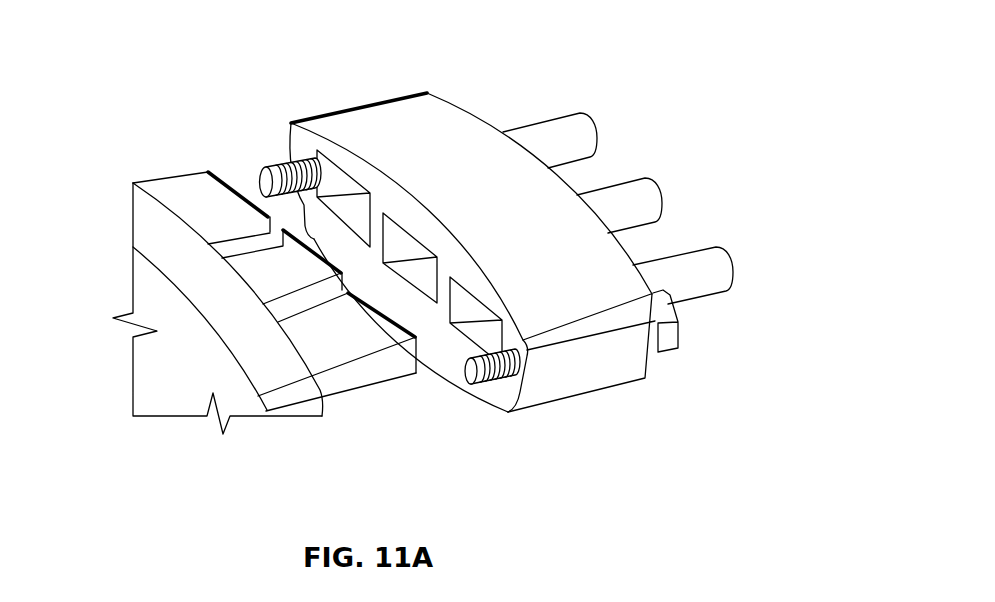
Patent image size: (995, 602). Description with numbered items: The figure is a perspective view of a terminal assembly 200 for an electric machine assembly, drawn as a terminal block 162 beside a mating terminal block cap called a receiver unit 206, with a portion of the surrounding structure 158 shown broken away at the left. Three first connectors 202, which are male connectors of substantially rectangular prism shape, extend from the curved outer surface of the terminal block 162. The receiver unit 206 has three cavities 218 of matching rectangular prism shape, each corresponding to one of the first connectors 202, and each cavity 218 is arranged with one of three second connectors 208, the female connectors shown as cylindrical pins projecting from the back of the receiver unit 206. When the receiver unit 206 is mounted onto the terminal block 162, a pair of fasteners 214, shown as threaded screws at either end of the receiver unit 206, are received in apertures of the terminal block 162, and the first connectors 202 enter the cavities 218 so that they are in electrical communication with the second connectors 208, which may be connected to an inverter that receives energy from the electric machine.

The terminal assembly 200 is at (467, 57).
The housing block 158 is at (242, 316).
The terminal block 162 is at (268, 415).
The first connectors 202 is at (249, 231).
The receiver unit 206 is at (486, 291).
The second connectors 208 is at (589, 115).
The fasteners 214 is at (283, 166).
The cavities 218 is at (379, 319).